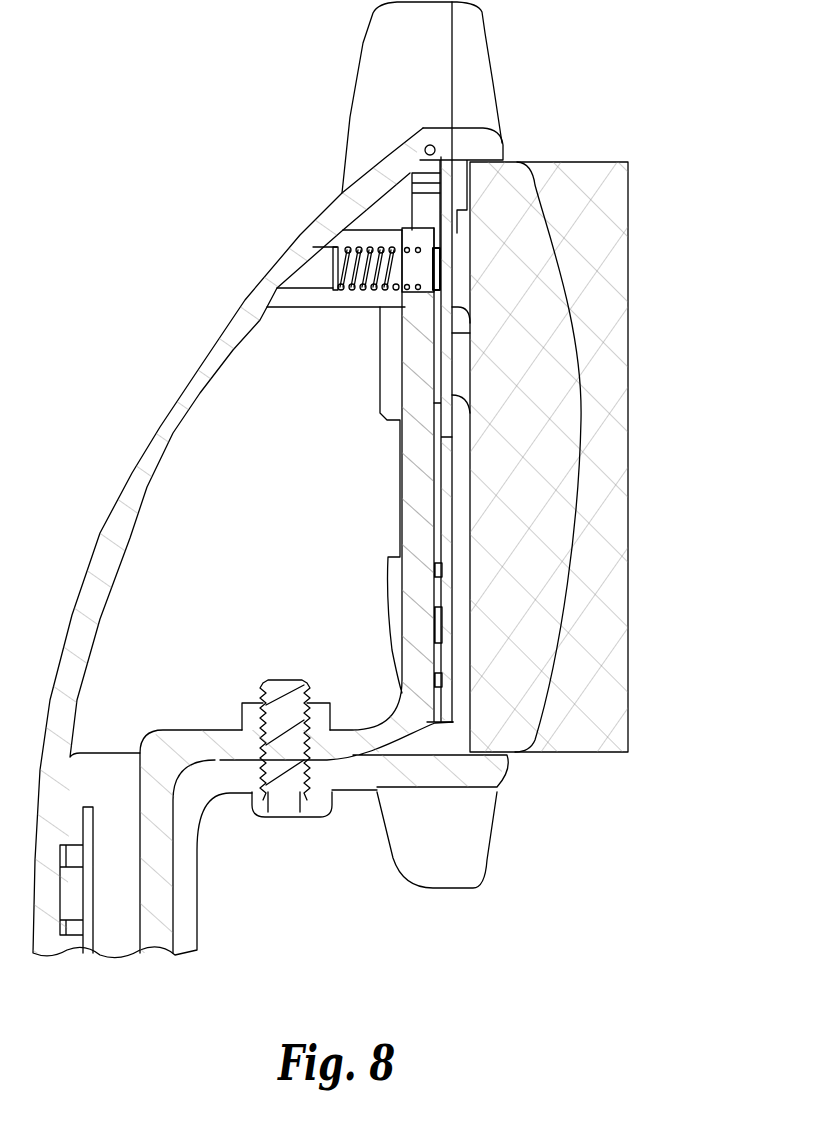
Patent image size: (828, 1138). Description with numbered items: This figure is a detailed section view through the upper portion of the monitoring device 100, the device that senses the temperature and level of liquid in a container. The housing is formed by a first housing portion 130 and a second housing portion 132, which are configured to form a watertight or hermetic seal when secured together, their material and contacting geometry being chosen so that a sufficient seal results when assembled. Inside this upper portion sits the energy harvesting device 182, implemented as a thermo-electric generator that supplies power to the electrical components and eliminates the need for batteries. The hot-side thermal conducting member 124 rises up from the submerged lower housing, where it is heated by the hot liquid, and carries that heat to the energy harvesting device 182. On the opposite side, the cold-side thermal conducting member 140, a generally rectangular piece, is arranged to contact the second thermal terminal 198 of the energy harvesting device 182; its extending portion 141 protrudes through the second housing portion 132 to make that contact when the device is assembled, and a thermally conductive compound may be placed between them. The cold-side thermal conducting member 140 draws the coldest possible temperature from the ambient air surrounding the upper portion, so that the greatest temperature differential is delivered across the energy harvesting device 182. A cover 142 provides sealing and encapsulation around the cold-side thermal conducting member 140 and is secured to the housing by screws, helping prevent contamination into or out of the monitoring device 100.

The monitoring device 100 is at (205, 252).
The first housing portion 130 is at (132, 473).
The second housing portion 132 is at (503, 147).
The extending portion 141 is at (452, 248).
The second thermal terminal 198 is at (440, 270).
The cold-side thermal conducting member 140 is at (570, 307).
The cover 142 is at (628, 413).
The energy harvesting device 182 is at (433, 290).
The hot-side thermal conducting member 124 is at (418, 500).